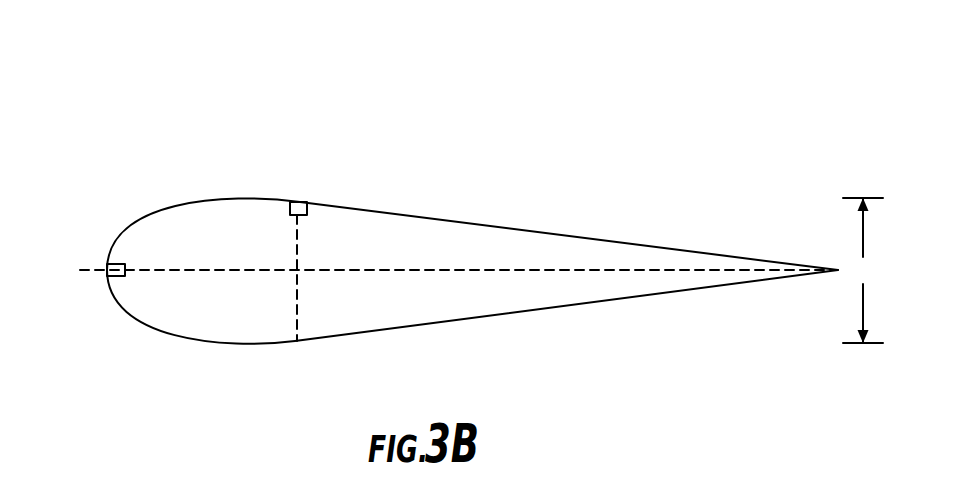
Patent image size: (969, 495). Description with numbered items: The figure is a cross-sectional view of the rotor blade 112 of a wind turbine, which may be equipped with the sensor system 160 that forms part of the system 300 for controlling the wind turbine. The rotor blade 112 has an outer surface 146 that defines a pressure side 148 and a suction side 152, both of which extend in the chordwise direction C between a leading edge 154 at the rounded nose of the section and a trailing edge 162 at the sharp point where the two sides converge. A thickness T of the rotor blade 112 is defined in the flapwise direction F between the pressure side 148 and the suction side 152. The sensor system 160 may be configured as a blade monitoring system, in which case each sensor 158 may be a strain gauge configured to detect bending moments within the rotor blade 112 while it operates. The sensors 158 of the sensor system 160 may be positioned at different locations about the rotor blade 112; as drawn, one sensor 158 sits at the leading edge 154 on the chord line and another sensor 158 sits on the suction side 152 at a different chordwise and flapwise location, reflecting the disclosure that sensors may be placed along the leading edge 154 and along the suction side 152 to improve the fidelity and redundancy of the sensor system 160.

The rotor blade 112 is at (630, 182).
The system 300 is at (290, 103).
The leading edge 154 is at (108, 220).
The sensor system 160 is at (208, 173).
The sensor 158 is at (303, 202).
The suction side 152 is at (460, 220).
The pressure side 148 is at (458, 322).
The outer surface 146 is at (605, 303).
The trailing edge 162 is at (828, 283).
The chordwise direction C is at (190, 273).
The flapwise direction F is at (298, 307).
The thickness T is at (863, 270).